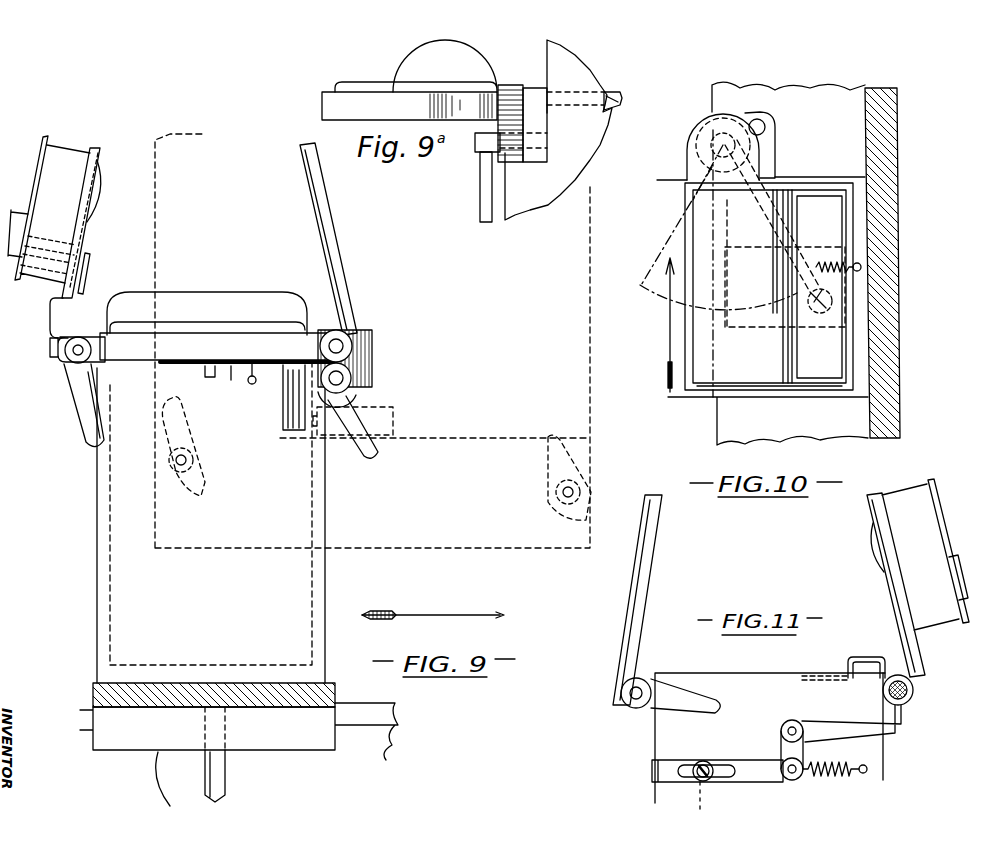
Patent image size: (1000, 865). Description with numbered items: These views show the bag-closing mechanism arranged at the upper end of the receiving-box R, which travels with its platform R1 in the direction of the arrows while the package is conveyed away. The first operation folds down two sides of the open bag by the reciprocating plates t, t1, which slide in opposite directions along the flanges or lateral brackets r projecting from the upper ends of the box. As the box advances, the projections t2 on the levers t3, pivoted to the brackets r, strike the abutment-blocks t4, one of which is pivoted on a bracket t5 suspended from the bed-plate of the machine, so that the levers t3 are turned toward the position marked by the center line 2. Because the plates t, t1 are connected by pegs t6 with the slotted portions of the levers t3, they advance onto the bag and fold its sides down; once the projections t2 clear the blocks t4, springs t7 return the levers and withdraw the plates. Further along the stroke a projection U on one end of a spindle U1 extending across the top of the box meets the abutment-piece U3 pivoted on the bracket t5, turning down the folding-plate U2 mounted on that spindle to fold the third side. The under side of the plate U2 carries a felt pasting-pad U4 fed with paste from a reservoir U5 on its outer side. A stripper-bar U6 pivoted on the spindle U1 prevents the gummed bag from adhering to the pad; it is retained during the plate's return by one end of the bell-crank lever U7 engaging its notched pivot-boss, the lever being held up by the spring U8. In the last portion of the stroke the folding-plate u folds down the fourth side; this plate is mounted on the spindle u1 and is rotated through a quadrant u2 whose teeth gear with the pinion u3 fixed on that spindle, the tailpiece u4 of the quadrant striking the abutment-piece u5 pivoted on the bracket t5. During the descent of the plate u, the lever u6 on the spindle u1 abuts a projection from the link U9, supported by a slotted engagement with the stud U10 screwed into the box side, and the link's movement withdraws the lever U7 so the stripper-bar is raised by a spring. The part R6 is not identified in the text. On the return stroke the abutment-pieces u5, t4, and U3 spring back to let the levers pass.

In FIG. 9, the receiving-box R is at (316, 590).
In FIG. 11, the receiving-box R is at (873, 750).
In FIG. 9, the platform R1 is at (322, 683).
In FIG. 9, the hanging bracket R6 is at (224, 774).
In FIG. 10, the reciprocating plate t is at (803, 185).
In FIG. 9, the reciprocating plate t1 is at (250, 291).
In FIG. 9A, the reciprocating plate t1 is at (475, 73).
In FIG. 10, the reciprocating plate t1 is at (829, 374).
In FIG. 9, the projection t2 is at (283, 419).
In FIG. 10, the projection t2 is at (755, 232).
In FIG. 9, the lever t3 is at (231, 380).
In FIG. 10, the lever t3 is at (742, 200).
In FIG. 9, the abutment-block t4 is at (384, 432).
In FIG. 10, the abutment-block t4 is at (769, 160).
In FIG. 10, the bracket t5 is at (895, 362).
In FIG. 9, the peg t6 is at (206, 378).
In FIG. 10, the peg t6 is at (823, 307).
In FIG. 9, the spring t7 is at (252, 385).
In FIG. 10, the spring t7 is at (828, 262).
In FIG. 9, the bracket r is at (306, 323).
In FIG. 9A, the bracket r is at (426, 97).
In FIG. 9, the folding-plate u is at (350, 305).
In FIG. 9A, the folding-plate u is at (574, 86).
In FIG. 11, the folding-plate u is at (641, 593).
In FIG. 9, the spindle u1 is at (352, 346).
In FIG. 9A, the spindle u1 is at (623, 98).
In FIG. 11, the spindle u1 is at (636, 692).
In FIG. 9, the quadrant u2 is at (358, 396).
In FIG. 9A, the quadrant u2 is at (521, 163).
In FIG. 9, the pinion u3 is at (352, 374).
In FIG. 9A, the pinion u3 is at (510, 107).
In FIG. 9, the tailpiece u4 is at (368, 456).
In FIG. 9A, the tailpiece u4 is at (489, 160).
In FIG. 9, the abutment-piece u5 is at (548, 470).
In FIG. 11, the lever u6 is at (707, 710).
In FIG. 9, the projection U is at (100, 412).
In FIG. 9, the spindle U1 is at (79, 348).
In FIG. 9, the folding-plate U2 is at (100, 154).
In FIG. 11, the folding-plate U2 is at (947, 613).
In FIG. 9, the abutment-piece U3 is at (174, 435).
In FIG. 9, the pasting-pad U4 is at (99, 197).
In FIG. 11, the pasting-pad U4 is at (873, 530).
In FIG. 9, the reservoir U5 is at (38, 179).
In FIG. 11, the reservoir U5 is at (948, 551).
In FIG. 9, the stripper-bar U6 is at (88, 268).
In FIG. 11, the stripper-bar U6 is at (856, 660).
In FIG. 11, the bell-crank lever U7 is at (838, 724).
In FIG. 11, the spring U8 is at (824, 774).
In FIG. 11, the link U9 is at (651, 766).
In FIG. 11, the stud U10 is at (708, 765).
In FIG. 10, the center line 2 is at (712, 279).